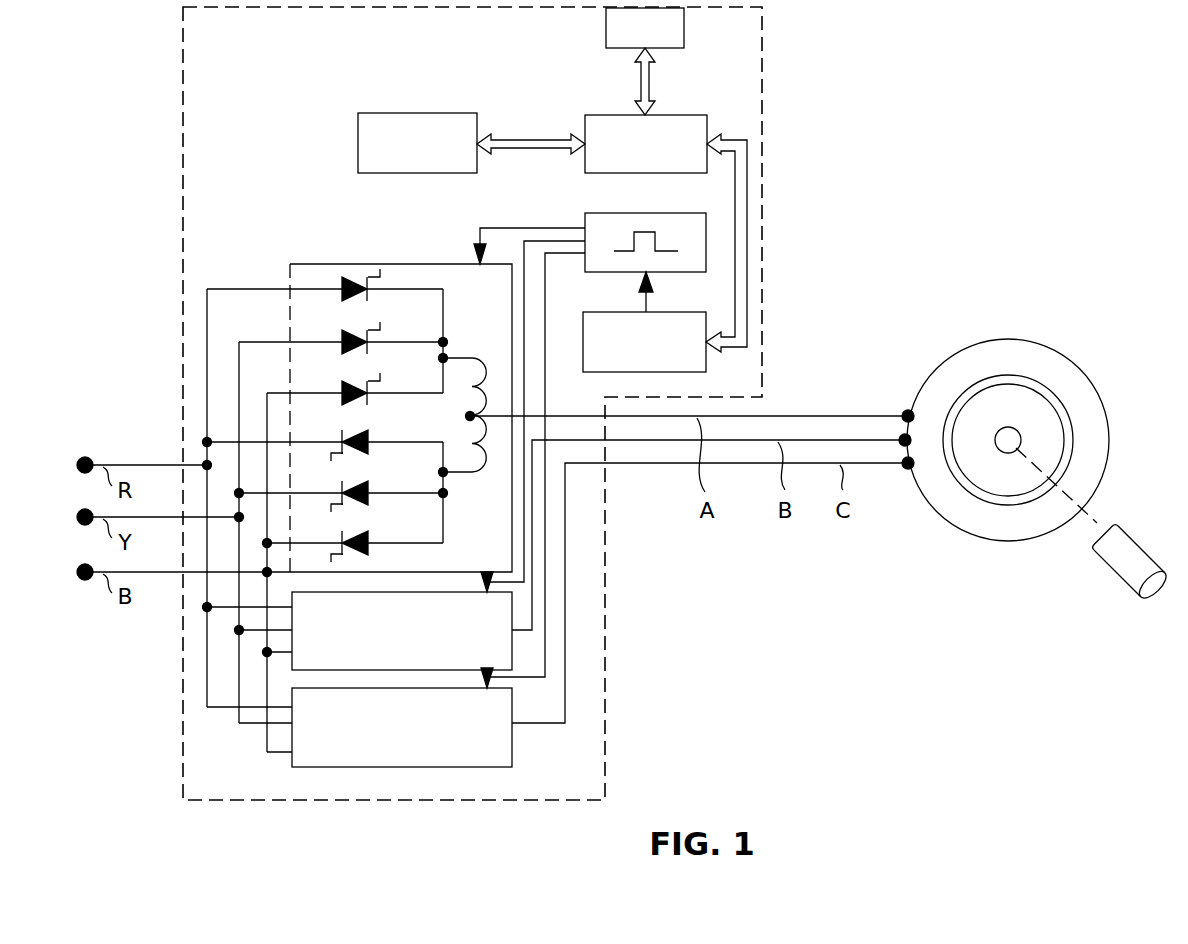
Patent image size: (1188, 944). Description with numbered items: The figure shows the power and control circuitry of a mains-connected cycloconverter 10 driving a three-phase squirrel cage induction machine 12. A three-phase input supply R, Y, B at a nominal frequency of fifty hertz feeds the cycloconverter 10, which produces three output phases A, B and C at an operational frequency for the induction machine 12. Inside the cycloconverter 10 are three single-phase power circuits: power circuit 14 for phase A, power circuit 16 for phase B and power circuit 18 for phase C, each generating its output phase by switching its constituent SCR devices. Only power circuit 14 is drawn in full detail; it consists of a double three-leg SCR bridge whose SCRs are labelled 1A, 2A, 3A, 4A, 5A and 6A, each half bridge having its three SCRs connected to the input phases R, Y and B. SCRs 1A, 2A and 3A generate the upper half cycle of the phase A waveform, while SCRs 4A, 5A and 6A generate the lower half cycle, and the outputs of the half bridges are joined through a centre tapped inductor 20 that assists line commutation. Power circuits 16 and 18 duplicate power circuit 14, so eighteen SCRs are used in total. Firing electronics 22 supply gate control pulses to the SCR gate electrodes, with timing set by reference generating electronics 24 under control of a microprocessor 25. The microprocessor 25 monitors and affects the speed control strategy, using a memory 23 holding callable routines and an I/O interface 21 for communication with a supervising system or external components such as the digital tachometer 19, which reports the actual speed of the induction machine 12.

The cycloconverter 10 is at (200, 173).
The three-phase squirrel cage induction machine 12 is at (955, 372).
The single-phase power circuit (phase A) 14 is at (359, 397).
The single-phase power circuit (phase B) 16 is at (498, 646).
The single-phase power circuit (phase C) 18 is at (512, 742).
The digital tachometer 19 is at (1120, 570).
The centre tapped inductor 20 is at (468, 475).
The I/O interface 21 is at (606, 38).
The firing electronics 22 is at (596, 256).
The memory 23 is at (370, 116).
The reference generating electronics 24 is at (596, 360).
The microprocessor 25 is at (615, 117).
The SCR 1A is at (325, 281).
The SCR 2A is at (341, 334).
The SCR 3A is at (355, 385).
The SCR 4A is at (325, 437).
The SCR 5A is at (341, 488).
The SCR 6A is at (355, 538).